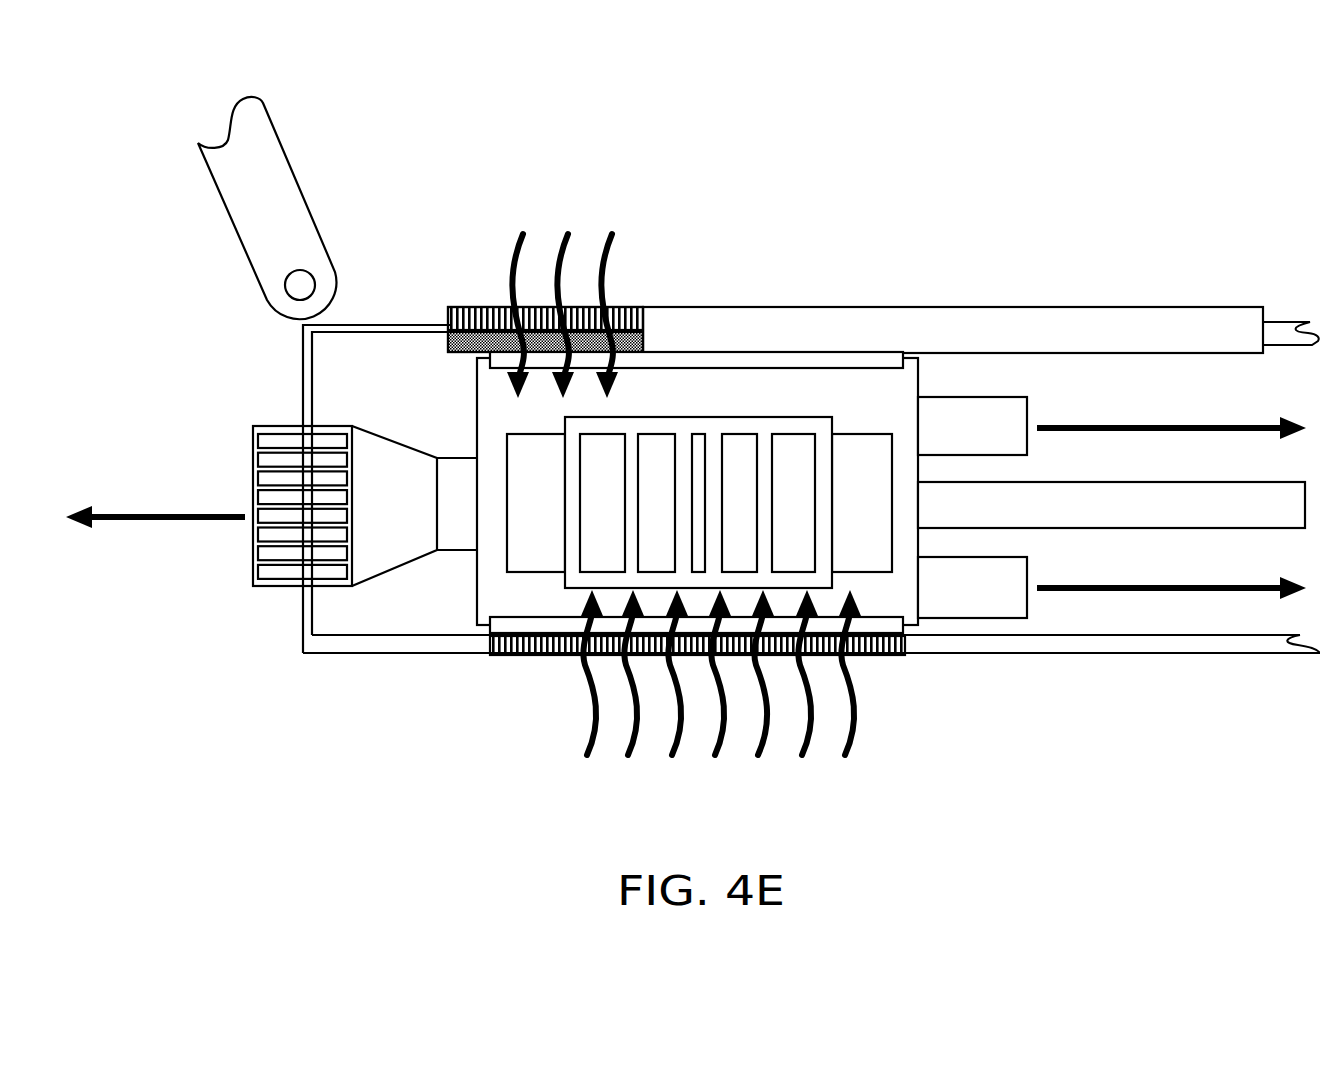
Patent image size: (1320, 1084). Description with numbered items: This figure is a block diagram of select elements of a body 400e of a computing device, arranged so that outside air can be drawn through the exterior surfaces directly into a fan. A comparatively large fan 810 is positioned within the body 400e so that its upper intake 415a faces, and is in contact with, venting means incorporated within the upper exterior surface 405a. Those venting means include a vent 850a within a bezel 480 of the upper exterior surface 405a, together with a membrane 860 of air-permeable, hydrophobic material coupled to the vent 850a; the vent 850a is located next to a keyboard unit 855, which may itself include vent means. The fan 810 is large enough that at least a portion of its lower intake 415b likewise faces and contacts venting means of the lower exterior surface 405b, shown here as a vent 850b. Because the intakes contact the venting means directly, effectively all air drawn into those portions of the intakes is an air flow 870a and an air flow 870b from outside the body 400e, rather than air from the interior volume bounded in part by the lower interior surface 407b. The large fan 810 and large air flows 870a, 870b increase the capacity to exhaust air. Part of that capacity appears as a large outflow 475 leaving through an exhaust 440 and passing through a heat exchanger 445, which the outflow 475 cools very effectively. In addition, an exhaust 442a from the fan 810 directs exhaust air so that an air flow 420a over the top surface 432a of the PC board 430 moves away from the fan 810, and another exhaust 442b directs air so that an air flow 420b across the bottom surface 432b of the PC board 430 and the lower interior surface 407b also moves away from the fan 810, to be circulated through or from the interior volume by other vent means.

The body 400e is at (968, 122).
The bezel 480 is at (358, 312).
The upper exterior surface 405a is at (1038, 342).
The lower exterior surface 405b is at (321, 668).
The lower interior surface 407b is at (362, 650).
The keyboard unit 855 is at (981, 297).
The vent 850a is at (499, 295).
The vent 850b is at (548, 672).
The upper intake 415a is at (739, 338).
The lower intake 415b is at (532, 603).
The fan 810 is at (890, 406).
The membrane 860 is at (440, 365).
The exhaust 440 is at (439, 440).
The heat exchanger 445 is at (236, 455).
The outflow 475 is at (231, 506).
The exhaust 442a is at (1003, 440).
The exhaust 442b is at (1003, 599).
The PC board 430 is at (1205, 519).
The top surface 432a is at (1125, 481).
The bottom surface 432b is at (1125, 530).
The air flow 420a is at (1263, 422).
The air flow 420b is at (1253, 582).
The air flow 870a is at (598, 219).
The air flow 870b is at (723, 801).